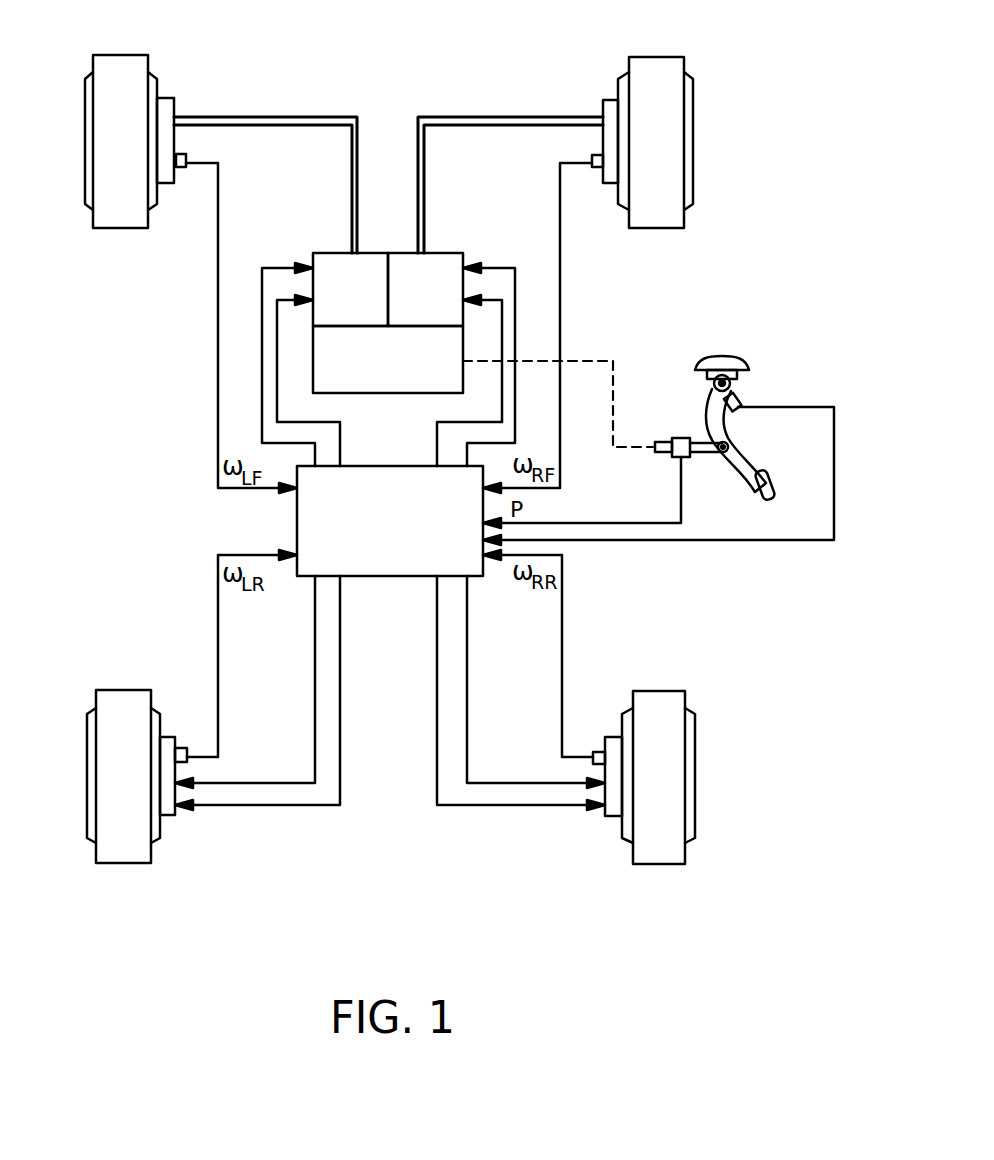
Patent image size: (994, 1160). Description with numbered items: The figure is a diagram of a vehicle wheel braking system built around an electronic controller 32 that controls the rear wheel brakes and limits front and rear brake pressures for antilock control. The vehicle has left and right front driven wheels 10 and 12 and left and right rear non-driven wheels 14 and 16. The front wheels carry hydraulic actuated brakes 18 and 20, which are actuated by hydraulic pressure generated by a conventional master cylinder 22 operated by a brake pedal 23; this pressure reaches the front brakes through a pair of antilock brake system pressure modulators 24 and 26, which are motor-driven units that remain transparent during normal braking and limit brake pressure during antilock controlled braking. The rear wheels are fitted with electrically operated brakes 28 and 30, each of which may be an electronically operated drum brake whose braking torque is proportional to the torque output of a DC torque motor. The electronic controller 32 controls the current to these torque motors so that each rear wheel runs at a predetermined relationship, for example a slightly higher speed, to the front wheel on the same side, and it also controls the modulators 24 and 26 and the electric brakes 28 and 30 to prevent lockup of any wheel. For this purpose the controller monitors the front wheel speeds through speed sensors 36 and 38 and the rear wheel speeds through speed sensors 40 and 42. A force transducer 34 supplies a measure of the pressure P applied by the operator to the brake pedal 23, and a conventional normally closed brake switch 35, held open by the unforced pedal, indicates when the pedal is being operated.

The left front driven wheel 10 is at (113, 55).
The right front driven wheel 12 is at (647, 63).
The left rear non-driven wheel 14 is at (143, 703).
The right rear non-driven wheel 16 is at (657, 718).
The hydraulic actuated brake 18 is at (167, 143).
The hydraulic actuated brake 20 is at (603, 143).
The master cylinder 22 is at (418, 393).
The brake pedal 23 is at (740, 464).
The antilock brake system pressure modulator 24 is at (372, 252).
The antilock brake system pressure modulator 26 is at (447, 252).
The electrically operated brake 28 is at (168, 805).
The electrically operated brake 30 is at (610, 805).
The electronic controller 32 is at (403, 578).
The force transducer 34 is at (684, 438).
The brake switch 35 is at (737, 395).
The speed sensor 36 is at (186, 167).
The speed sensor 38 is at (597, 167).
The speed sensor 40 is at (185, 750).
The speed sensor 42 is at (593, 752).